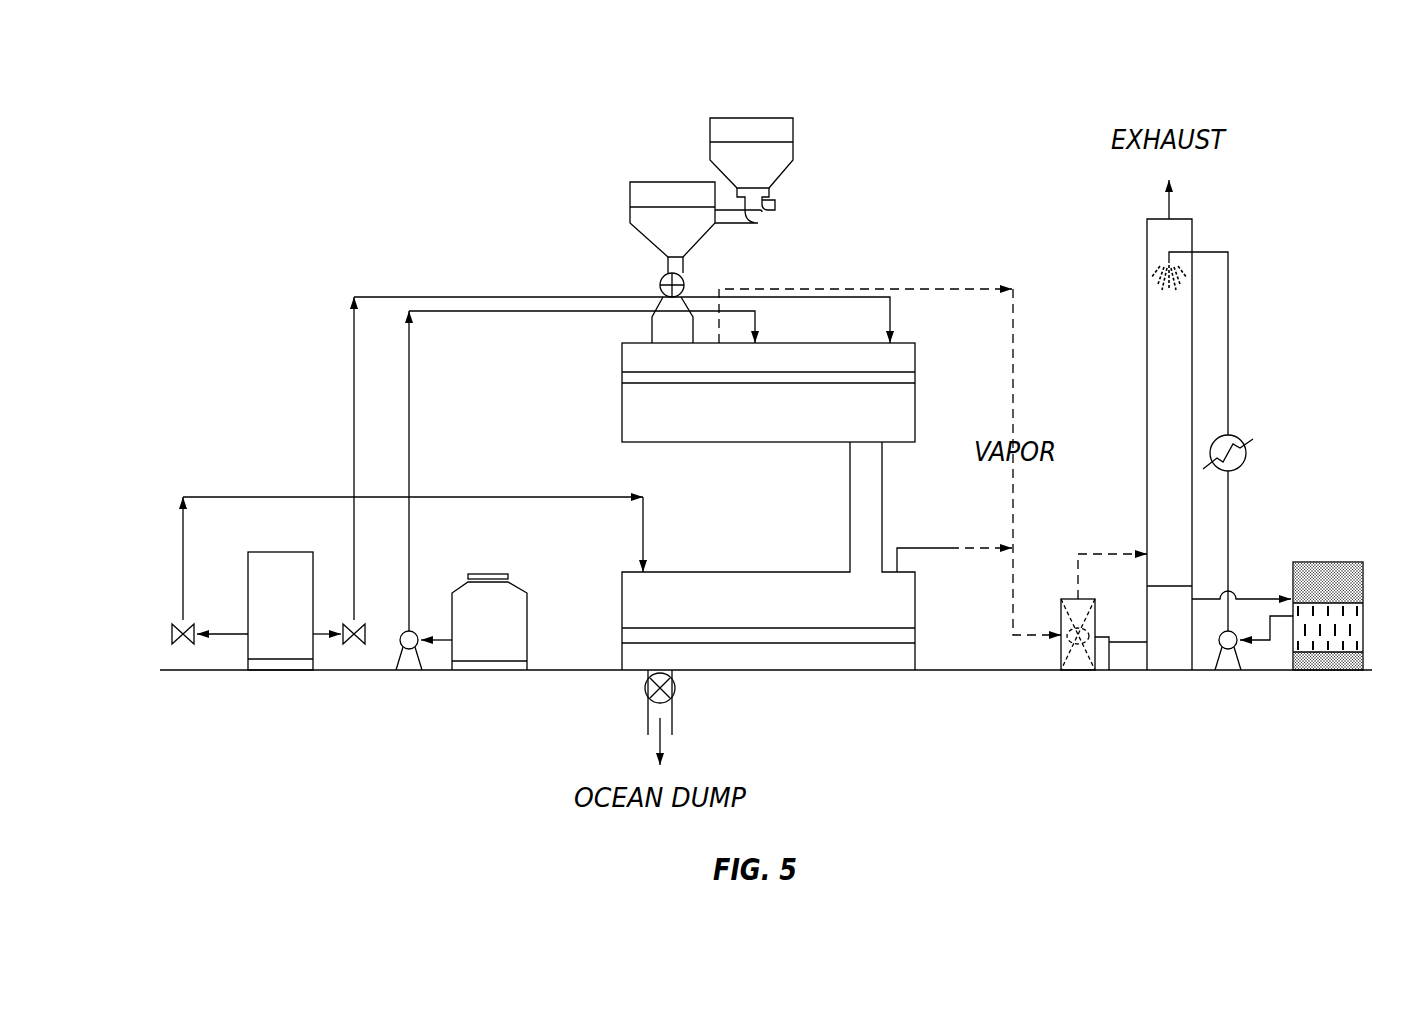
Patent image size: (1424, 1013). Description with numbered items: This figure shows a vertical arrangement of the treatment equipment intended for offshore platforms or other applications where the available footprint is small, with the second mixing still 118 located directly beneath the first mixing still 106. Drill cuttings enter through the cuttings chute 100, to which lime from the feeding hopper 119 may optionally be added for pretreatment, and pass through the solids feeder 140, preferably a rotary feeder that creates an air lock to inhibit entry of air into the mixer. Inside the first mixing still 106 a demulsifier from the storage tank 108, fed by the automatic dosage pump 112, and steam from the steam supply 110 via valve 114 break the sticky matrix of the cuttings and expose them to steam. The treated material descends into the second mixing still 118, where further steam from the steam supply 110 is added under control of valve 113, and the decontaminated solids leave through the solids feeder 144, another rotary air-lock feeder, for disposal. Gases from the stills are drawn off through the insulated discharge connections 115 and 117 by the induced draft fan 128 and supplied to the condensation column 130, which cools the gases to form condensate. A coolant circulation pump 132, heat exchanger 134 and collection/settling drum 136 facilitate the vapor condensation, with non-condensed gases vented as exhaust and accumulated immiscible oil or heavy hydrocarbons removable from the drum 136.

The cuttings chute 100 is at (630, 195).
The feeding hopper 119 is at (797, 156).
The solids feeder 140 is at (686, 278).
The discharge connection 115 is at (824, 287).
The first mixing still 106 is at (737, 424).
The second mixing still 118 is at (740, 613).
The discharge connection 117 is at (950, 550).
The steam supply 110 is at (258, 616).
The valve 113 is at (185, 647).
The valve 114 is at (352, 647).
The automatic dosage pump 112 is at (408, 669).
The storage tank 108 is at (465, 637).
The solids feeder 144 is at (676, 690).
The induced draft fan 128 is at (1078, 671).
The condensation column 130 is at (1147, 320).
The heat exchanger 134 is at (1253, 450).
The coolant circulation pump 132 is at (1228, 671).
The collection/settling drum 136 is at (1347, 562).